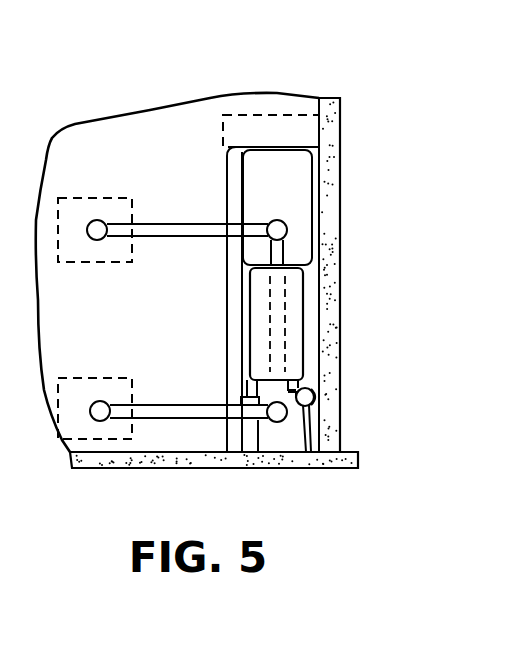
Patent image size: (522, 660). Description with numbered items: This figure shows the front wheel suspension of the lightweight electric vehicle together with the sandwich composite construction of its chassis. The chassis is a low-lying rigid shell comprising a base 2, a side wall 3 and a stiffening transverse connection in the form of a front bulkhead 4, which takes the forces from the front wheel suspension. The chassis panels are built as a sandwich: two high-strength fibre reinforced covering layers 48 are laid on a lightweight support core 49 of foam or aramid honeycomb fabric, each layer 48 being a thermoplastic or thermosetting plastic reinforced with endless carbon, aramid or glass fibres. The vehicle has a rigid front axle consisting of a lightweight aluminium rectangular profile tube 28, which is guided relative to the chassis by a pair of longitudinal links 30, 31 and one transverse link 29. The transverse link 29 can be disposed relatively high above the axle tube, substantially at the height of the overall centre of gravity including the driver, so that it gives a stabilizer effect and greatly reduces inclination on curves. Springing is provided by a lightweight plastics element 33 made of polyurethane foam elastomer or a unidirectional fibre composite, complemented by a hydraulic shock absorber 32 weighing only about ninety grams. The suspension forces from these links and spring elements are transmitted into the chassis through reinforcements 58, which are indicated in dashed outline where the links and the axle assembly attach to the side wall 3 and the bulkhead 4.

The base 2 is at (185, 469).
The side wall 3 is at (150, 128).
The front bulkhead 4 is at (340, 150).
The rectangular profile tube 28 is at (300, 297).
The transverse link 29 is at (308, 456).
The longitudinal link 30 is at (180, 222).
The longitudinal link 31 is at (178, 404).
The hydraulic shock absorber 32 is at (249, 443).
The plastics element 33 is at (302, 192).
The covering layer 48 is at (340, 330).
The support core 49 is at (330, 378).
The reinforcement 58 is at (245, 117).